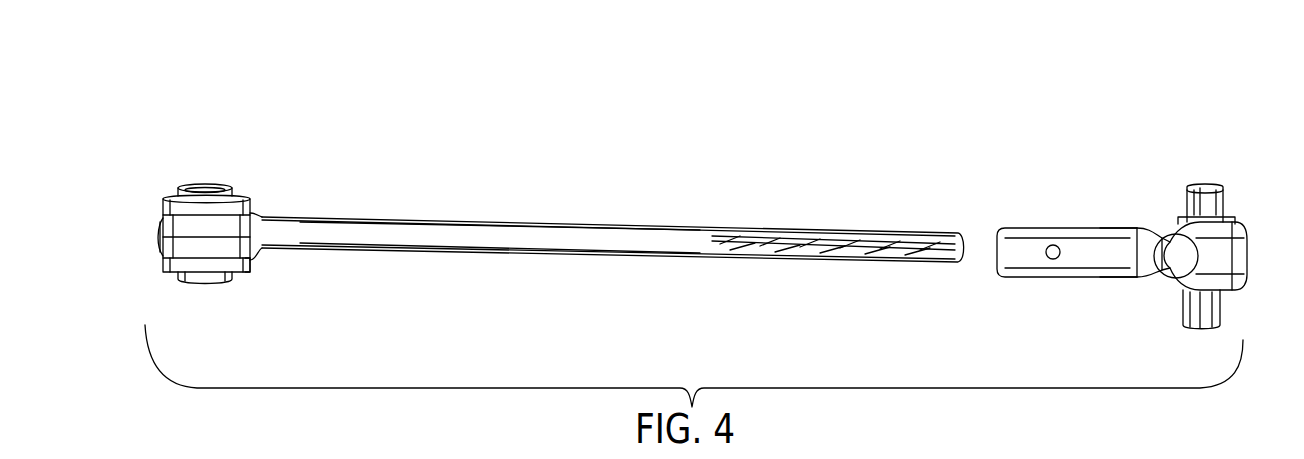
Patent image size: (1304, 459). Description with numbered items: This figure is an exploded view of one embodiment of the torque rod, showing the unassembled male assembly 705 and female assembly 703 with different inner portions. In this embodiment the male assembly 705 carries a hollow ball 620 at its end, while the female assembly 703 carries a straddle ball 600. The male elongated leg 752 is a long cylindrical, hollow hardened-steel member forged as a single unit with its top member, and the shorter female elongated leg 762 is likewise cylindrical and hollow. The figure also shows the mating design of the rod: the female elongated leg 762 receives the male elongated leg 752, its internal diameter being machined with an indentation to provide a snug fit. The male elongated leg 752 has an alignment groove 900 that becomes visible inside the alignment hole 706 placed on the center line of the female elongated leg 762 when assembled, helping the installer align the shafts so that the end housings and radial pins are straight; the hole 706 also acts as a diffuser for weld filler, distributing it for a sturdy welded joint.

The hollow ball 620 is at (232, 186).
The male assembly 705 is at (252, 273).
The male elongated leg 752 is at (750, 262).
The alignment groove 900 is at (767, 242).
The female assembly 703 is at (1068, 280).
The alignment hole 706 is at (1053, 246).
The female elongated leg 762 is at (1110, 227).
The straddle ball 600 is at (1200, 182).